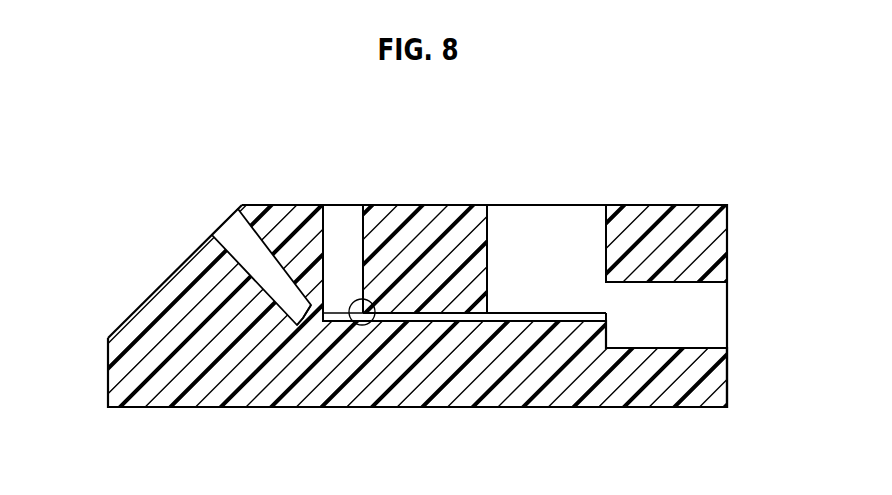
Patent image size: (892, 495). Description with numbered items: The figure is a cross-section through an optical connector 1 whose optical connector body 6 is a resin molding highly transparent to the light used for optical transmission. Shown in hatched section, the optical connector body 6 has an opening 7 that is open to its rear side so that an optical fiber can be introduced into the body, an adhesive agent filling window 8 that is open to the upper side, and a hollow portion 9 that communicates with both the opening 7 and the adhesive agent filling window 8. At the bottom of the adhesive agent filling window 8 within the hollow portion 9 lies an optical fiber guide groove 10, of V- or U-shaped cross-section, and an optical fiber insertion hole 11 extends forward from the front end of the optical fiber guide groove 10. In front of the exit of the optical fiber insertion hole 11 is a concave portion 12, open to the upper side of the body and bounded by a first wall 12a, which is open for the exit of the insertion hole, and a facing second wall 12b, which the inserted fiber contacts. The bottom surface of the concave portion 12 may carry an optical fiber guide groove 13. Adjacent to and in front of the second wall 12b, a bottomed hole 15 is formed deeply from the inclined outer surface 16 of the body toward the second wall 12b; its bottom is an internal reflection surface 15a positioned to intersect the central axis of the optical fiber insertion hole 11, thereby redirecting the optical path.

The optical connector 1 is at (667, 158).
The optical connector body 6 is at (453, 235).
The opening 7 is at (710, 323).
The adhesive agent filling window 8 is at (568, 225).
The hollow portion 9 is at (526, 235).
The optical fiber guide groove 10 is at (570, 303).
The optical fiber insertion hole 11 is at (413, 300).
The concave portion 12 is at (352, 247).
The first wall 12a is at (364, 310).
The second wall 12b is at (335, 312).
The optical fiber guide groove 13 is at (372, 326).
The bottomed hole 15 is at (226, 238).
The internal reflection surface 15a is at (306, 327).
The inclined outer surface 16 is at (163, 284).